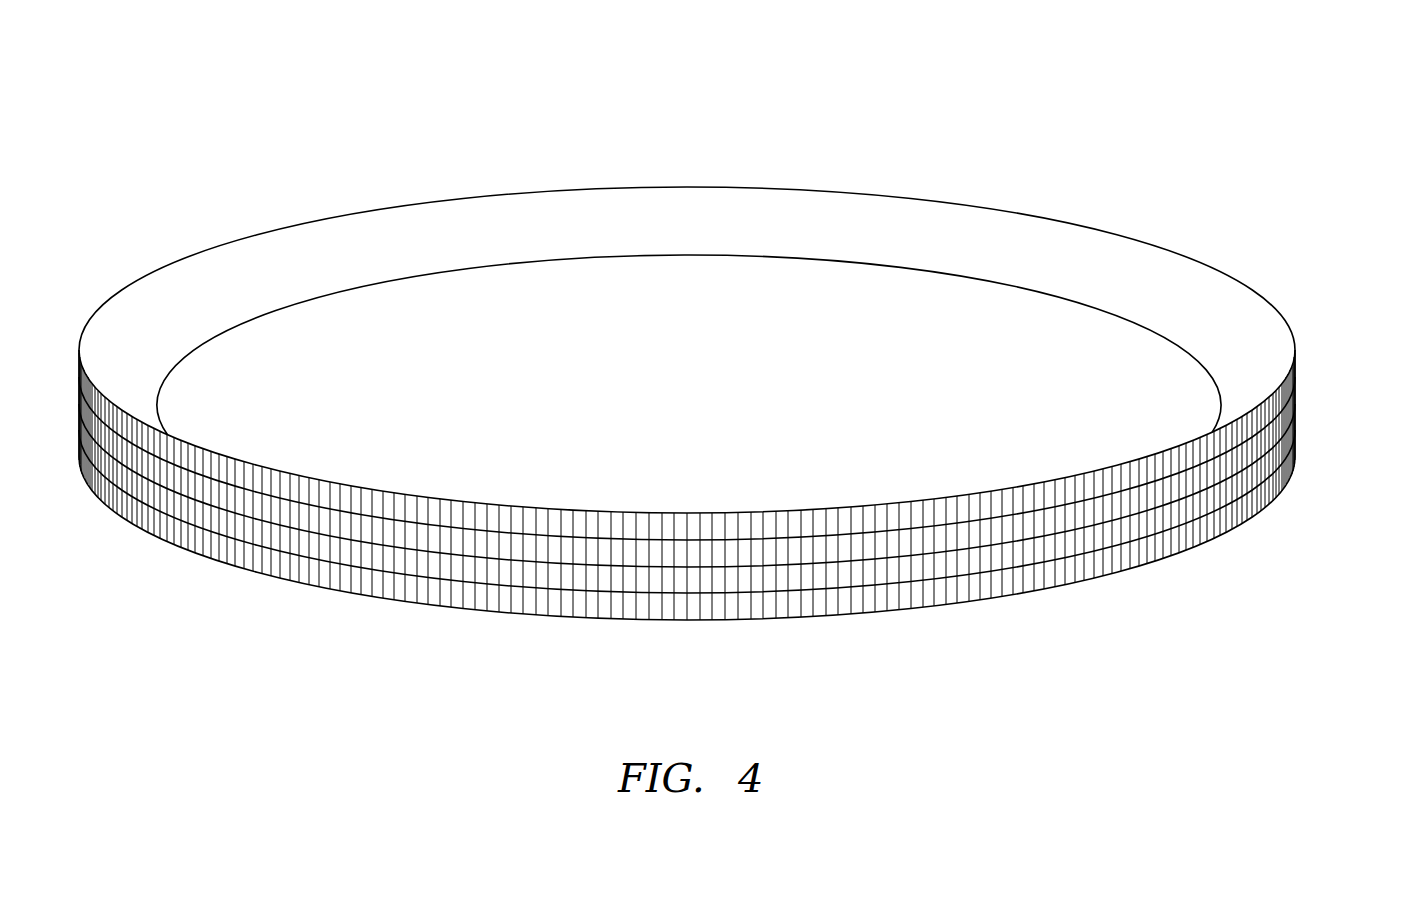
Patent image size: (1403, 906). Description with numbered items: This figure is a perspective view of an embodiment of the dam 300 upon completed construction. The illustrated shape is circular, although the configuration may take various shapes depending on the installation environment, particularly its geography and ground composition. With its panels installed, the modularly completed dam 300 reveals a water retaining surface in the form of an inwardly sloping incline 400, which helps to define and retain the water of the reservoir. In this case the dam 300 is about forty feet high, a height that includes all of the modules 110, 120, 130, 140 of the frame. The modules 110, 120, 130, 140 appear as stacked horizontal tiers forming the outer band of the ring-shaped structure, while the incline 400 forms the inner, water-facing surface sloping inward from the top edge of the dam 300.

The dam 300 is at (1003, 70).
The inwardly sloping incline 400 is at (392, 232).
The module 110 is at (490, 520).
The module 120 is at (1283, 413).
The module 130 is at (350, 548).
The module 140 is at (1283, 460).